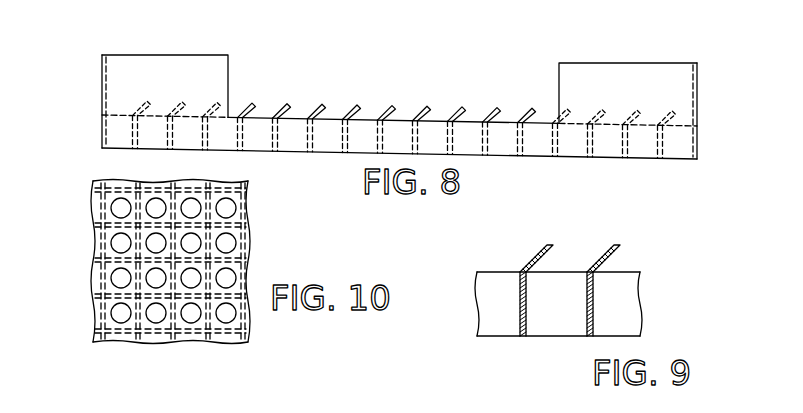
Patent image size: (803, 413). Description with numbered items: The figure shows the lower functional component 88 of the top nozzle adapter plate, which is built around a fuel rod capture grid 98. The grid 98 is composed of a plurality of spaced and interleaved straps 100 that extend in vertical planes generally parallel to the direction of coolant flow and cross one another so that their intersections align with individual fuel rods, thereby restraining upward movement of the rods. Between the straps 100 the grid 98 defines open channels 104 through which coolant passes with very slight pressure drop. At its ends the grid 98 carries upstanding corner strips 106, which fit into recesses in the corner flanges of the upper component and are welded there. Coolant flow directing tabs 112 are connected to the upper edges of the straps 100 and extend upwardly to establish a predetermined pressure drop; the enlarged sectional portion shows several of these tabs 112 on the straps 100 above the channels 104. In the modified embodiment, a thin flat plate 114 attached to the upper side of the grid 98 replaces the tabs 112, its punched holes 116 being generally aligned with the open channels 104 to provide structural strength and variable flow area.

In FIG. 8, the lower functional component 88 is at (118, 148).
In FIG. 10, the lower functional component 88 is at (257, 212).
In FIG. 8, the grid 98 is at (703, 126).
In FIG. 10, the grid 98 is at (96, 296).
In FIG. 8, the straps 100 is at (591, 140).
In FIG. 10, the straps 100 is at (128, 330).
In FIG. 9, the straps 100 is at (527, 298).
In FIG. 8, the open channels 104 is at (508, 155).
In FIG. 10, the open channels 104 is at (236, 282).
In FIG. 9, the open channels 104 is at (562, 298).
In FIG. 8, the corner strips 106 is at (98, 72).
In FIG. 8, the tabs 112 is at (530, 104).
In FIG. 9, the tabs 112 is at (541, 247).
In FIG. 10, the flat plate 114 is at (225, 344).
In FIG. 10, the holes 116 is at (111, 245).